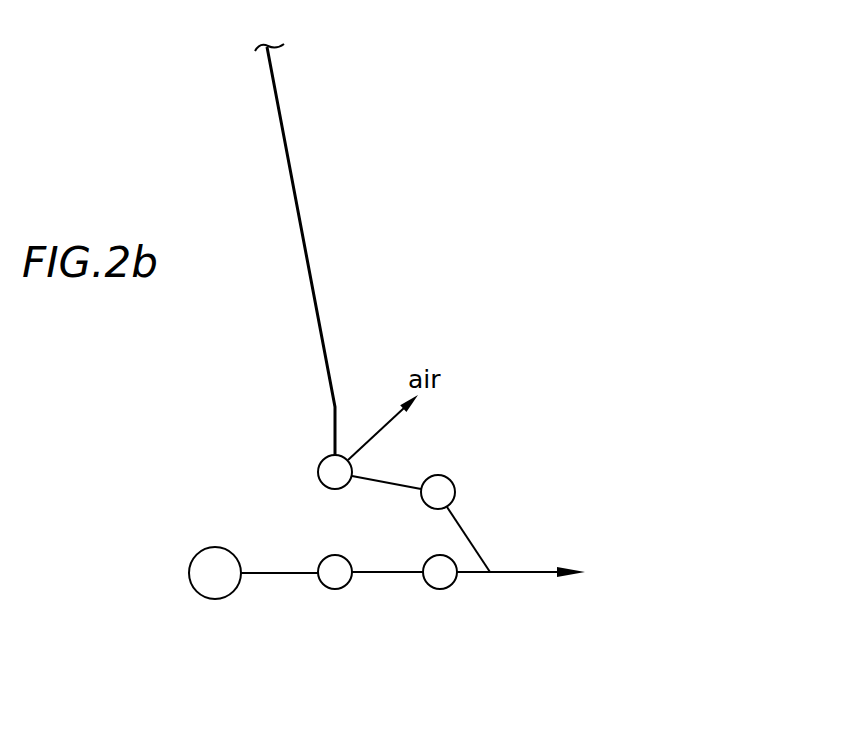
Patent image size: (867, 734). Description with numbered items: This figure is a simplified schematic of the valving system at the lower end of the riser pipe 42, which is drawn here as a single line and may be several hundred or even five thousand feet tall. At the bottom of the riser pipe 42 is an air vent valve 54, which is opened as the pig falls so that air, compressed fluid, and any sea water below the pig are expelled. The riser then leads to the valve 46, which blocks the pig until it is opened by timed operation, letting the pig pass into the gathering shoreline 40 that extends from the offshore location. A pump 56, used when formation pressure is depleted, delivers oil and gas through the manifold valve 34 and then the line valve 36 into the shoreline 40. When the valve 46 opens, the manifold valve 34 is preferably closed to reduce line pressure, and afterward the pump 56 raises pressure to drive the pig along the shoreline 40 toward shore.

The riser pipe 42 is at (307, 240).
The air vent valve 54 is at (318, 470).
The valve 46 is at (455, 480).
The pump 56 is at (195, 560).
The manifold valve 34 is at (336, 590).
The line valve 36 is at (443, 590).
The gathering shoreline 40 is at (525, 572).